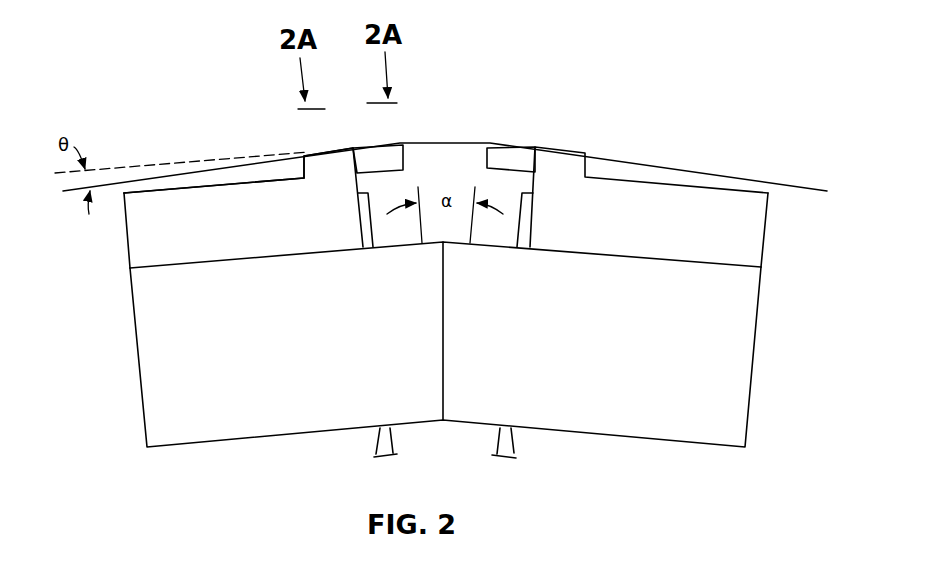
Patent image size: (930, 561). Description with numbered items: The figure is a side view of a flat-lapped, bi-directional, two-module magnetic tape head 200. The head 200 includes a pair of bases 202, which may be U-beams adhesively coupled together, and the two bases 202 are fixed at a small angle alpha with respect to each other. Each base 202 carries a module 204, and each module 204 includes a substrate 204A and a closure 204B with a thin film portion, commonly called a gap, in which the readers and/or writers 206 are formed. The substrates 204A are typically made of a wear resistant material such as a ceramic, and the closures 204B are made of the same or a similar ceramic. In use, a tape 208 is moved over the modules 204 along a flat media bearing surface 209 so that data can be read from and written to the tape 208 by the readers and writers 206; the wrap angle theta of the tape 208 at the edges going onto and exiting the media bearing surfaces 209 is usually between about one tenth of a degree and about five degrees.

The magnetic tape head 200 is at (181, 114).
The base 202 is at (133, 335).
The module 204 is at (127, 238).
The substrate 204A is at (187, 215).
The closure 204B is at (485, 159).
The readers and/or writers 206 is at (357, 144).
The tape 208 is at (682, 170).
The media bearing surface 209 is at (311, 146).